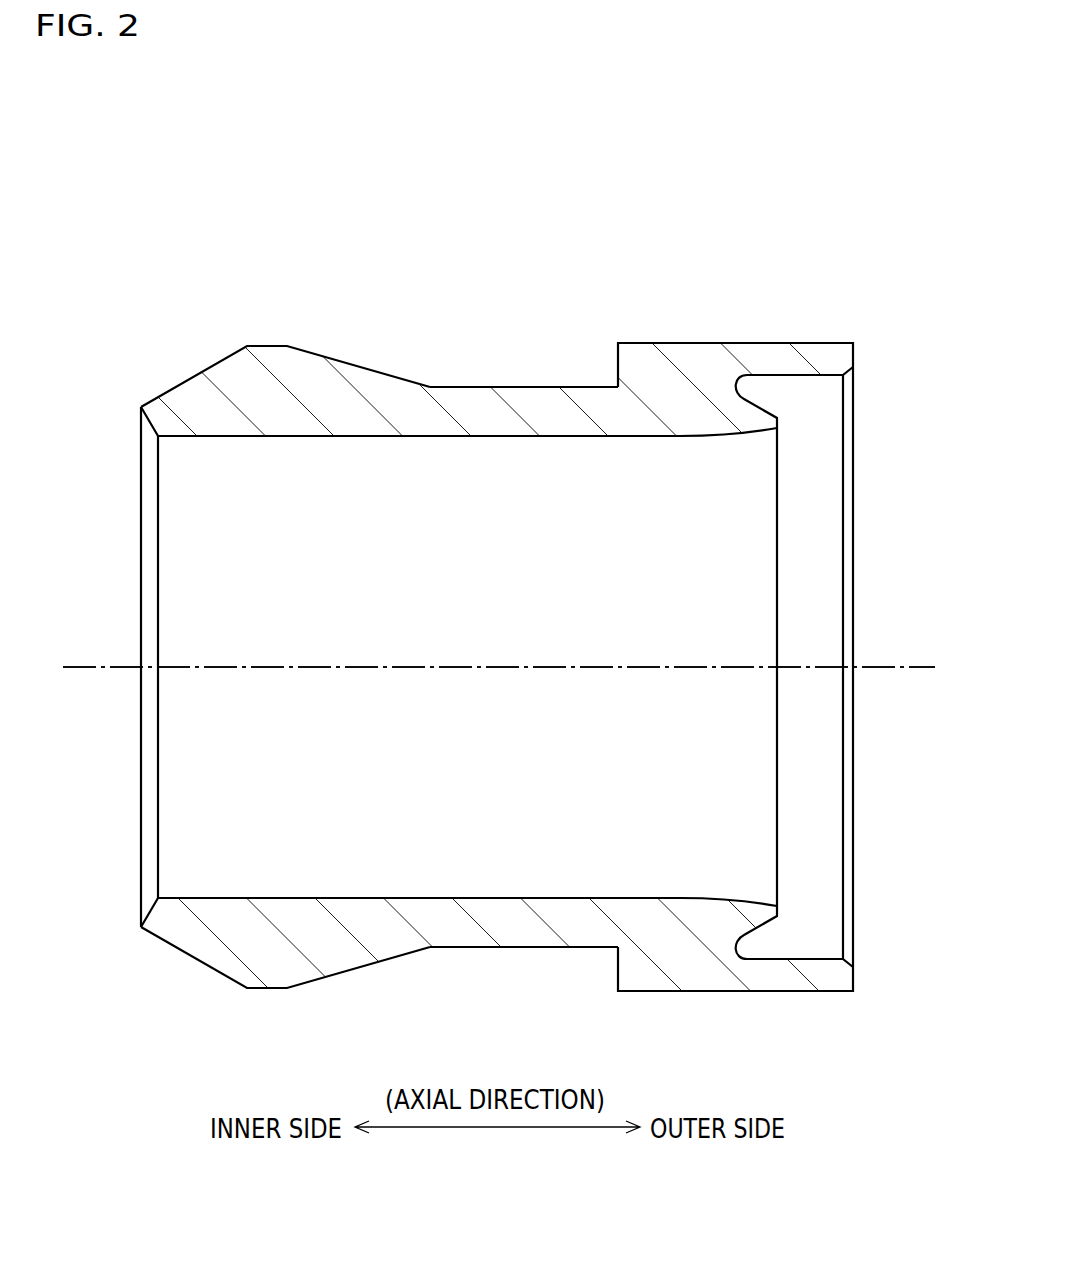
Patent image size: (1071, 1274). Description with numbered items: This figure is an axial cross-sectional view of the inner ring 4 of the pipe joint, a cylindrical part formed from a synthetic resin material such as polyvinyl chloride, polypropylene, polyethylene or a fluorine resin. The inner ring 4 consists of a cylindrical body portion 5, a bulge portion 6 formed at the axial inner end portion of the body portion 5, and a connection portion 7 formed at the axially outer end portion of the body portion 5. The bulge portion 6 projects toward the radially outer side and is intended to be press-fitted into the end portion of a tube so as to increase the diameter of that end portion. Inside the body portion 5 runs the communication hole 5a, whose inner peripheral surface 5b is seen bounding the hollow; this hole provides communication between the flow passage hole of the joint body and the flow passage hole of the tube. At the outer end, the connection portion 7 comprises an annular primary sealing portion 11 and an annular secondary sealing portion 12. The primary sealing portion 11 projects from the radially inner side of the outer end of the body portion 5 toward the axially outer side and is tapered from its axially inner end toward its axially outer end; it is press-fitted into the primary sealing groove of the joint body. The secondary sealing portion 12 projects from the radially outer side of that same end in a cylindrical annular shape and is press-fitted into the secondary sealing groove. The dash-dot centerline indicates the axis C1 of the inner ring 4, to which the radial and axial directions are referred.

The inner ring 4 is at (160, 292).
The body portion 5 is at (501, 402).
The communication hole 5a is at (482, 634).
The inner peripheral surface 5b is at (309, 438).
The bulge portion 6 is at (265, 346).
The connection portion 7 is at (775, 234).
The primary sealing portion 11 is at (757, 415).
The secondary sealing portion 12 is at (833, 362).
The axis C1 is at (908, 667).